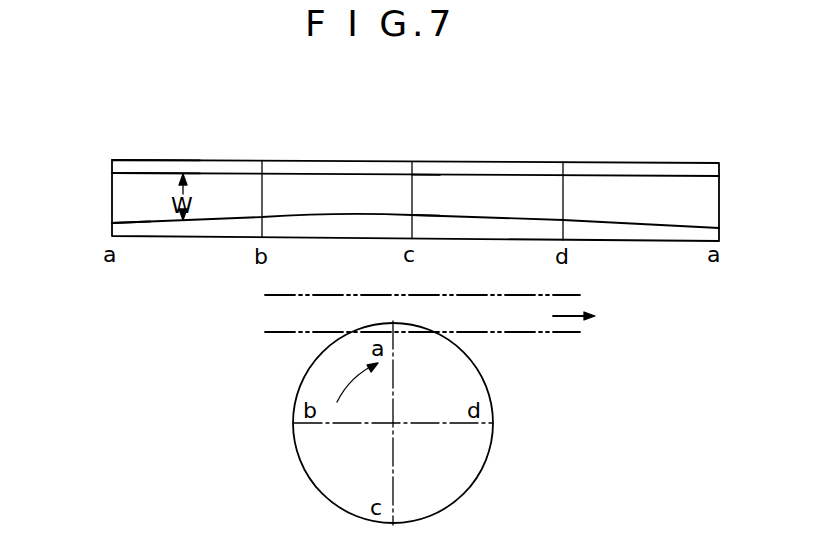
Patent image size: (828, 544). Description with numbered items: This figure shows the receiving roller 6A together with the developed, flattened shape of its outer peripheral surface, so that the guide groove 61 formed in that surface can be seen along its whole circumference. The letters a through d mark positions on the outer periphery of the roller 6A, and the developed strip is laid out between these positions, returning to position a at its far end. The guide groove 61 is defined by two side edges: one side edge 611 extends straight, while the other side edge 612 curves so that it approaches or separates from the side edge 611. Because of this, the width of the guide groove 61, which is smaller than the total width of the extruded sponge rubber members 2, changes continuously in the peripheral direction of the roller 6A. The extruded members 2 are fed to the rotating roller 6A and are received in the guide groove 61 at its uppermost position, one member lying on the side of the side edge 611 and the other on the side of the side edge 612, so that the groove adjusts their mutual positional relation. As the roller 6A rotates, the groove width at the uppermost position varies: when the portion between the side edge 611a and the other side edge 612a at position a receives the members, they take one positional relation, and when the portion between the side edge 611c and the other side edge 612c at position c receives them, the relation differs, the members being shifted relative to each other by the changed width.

The sponge rubber members 2 is at (520, 345).
The receiving roller 6A is at (254, 155).
The guide groove 61 is at (335, 188).
The side edge 611 is at (201, 172).
The side edge portion at position a 611a is at (112, 170).
The side edge portion at position c 611c is at (416, 172).
The other side edge 612 is at (307, 218).
The other side edge portion at position a 612a is at (112, 223).
The other side edge portion at position c 612c is at (412, 216).